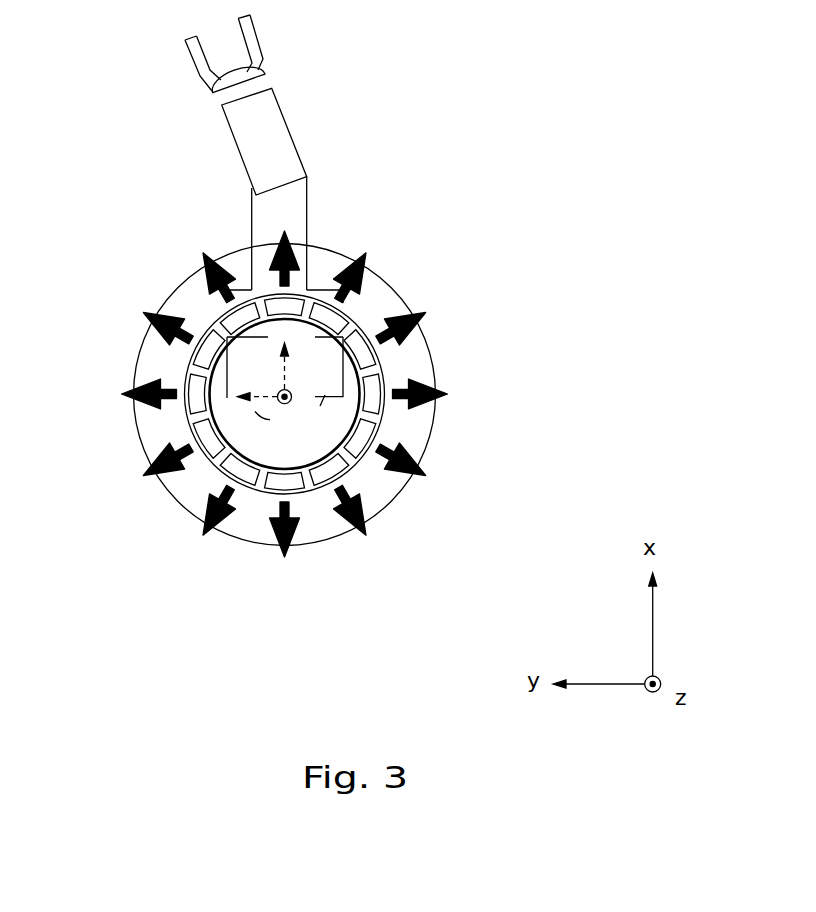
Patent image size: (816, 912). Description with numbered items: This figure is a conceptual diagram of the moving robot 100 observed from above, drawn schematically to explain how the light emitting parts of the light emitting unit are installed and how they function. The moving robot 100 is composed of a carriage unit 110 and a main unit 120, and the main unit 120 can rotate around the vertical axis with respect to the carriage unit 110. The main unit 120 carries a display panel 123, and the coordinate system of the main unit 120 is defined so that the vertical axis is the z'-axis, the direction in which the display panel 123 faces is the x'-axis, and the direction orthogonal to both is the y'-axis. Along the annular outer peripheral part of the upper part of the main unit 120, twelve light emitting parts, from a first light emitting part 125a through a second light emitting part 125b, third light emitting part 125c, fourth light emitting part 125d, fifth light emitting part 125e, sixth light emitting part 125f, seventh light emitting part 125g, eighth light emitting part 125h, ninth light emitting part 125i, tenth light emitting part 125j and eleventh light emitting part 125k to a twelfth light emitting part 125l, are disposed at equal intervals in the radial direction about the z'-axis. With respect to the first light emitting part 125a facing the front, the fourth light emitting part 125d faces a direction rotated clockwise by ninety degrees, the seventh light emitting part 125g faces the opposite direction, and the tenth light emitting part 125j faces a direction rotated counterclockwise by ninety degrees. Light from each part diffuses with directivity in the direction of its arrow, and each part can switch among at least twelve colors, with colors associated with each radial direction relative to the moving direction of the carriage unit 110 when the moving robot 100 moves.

The moving robot 100 is at (77, 33).
The carriage unit 110 is at (422, 348).
The main unit 120 is at (200, 462).
The display panel 123 is at (237, 338).
The first light emitting part 125a is at (291, 304).
The second light emitting part 125b is at (338, 312).
The third light emitting part 125c is at (378, 352).
The fourth light emitting part 125d is at (377, 400).
The fifth light emitting part 125e is at (370, 456).
The sixth light emitting part 125f is at (330, 478).
The seventh light emitting part 125g is at (278, 488).
The eighth light emitting part 125h is at (235, 472).
The ninth light emitting part 125i is at (203, 438).
The tenth light emitting part 125j is at (192, 390).
The eleventh light emitting part 125k is at (188, 357).
The twelfth light emitting part 125l is at (249, 310).